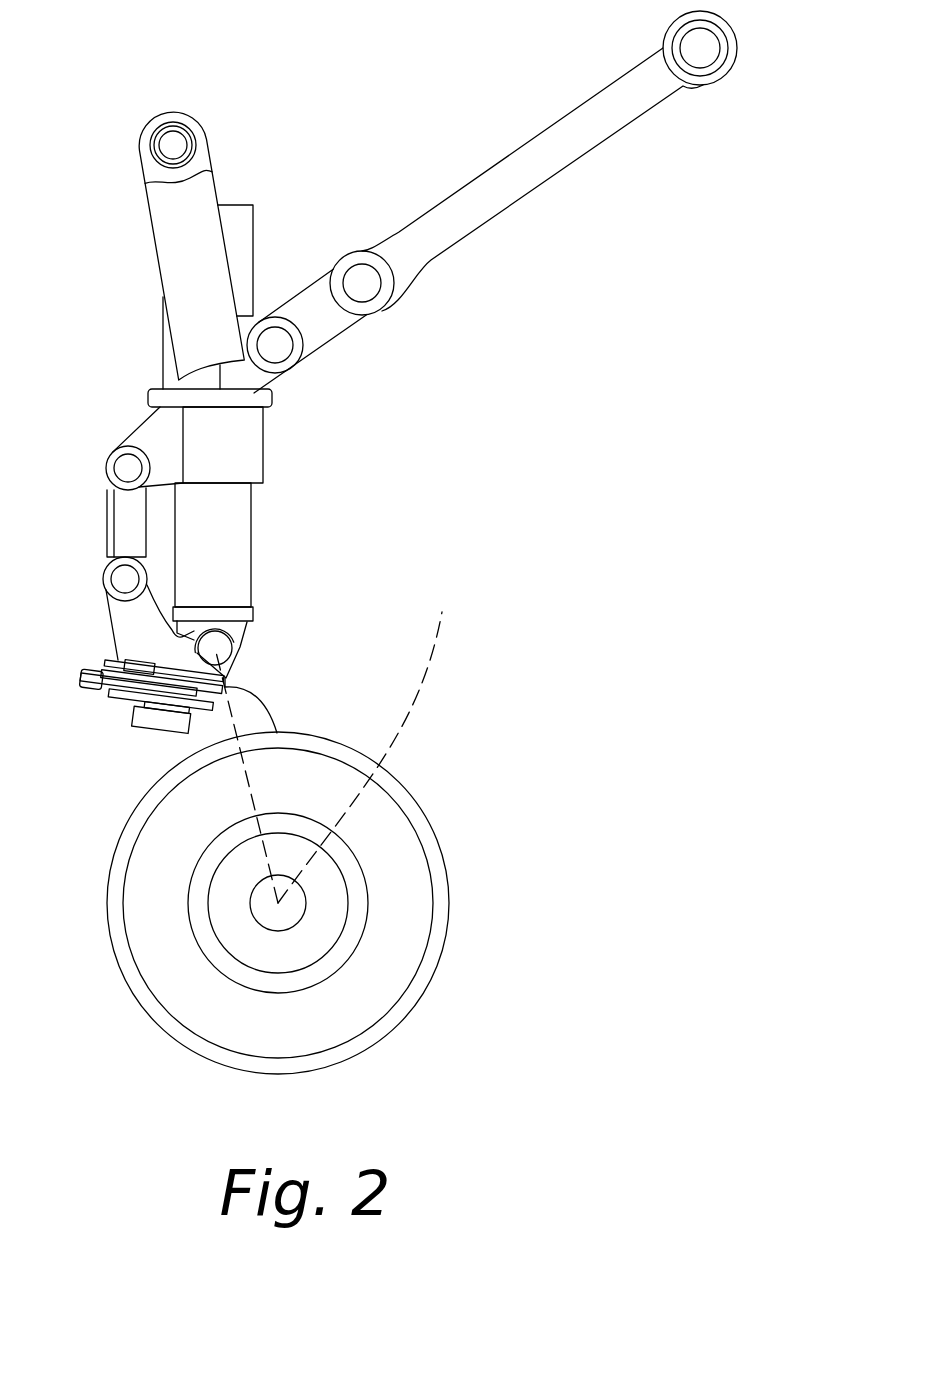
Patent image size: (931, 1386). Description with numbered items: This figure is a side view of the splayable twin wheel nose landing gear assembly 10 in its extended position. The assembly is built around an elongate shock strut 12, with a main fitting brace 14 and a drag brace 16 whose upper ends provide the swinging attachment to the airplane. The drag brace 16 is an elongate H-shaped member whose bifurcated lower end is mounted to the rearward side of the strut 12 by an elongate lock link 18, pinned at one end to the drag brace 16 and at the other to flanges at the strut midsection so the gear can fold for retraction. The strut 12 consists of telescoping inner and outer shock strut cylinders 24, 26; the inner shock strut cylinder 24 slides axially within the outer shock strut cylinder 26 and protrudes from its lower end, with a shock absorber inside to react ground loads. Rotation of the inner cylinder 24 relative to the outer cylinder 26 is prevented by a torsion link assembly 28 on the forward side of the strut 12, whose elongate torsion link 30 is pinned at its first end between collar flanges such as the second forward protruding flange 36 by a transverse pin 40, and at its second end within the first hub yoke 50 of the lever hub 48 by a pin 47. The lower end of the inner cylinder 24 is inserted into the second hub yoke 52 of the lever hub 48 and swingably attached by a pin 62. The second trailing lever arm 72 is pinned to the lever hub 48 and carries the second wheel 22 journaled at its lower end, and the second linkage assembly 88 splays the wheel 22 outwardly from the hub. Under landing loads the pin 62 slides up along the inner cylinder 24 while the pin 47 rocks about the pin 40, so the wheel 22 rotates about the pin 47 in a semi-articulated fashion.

The landing gear assembly 10 is at (296, 135).
The shock strut 12 is at (160, 363).
The main fitting brace 14 is at (145, 207).
The drag brace 16 is at (550, 184).
The lock link 18 is at (336, 340).
The second wheel 22 is at (150, 1018).
The inner shock strut cylinder 24 is at (245, 512).
The outer shock strut cylinder 26 is at (245, 237).
The torsion link assembly 28 is at (270, 457).
The torsion link 30 is at (113, 522).
The second forward protruding flange 36 is at (138, 442).
The pin 40 is at (118, 470).
The pin 47 is at (118, 582).
The lever hub 48 is at (103, 618).
The first hub yoke 50 is at (110, 603).
The second hub yoke 52 is at (232, 667).
The pin 62 is at (223, 652).
The second trailing lever arm 72 is at (273, 705).
The second linkage assembly 88 is at (110, 710).